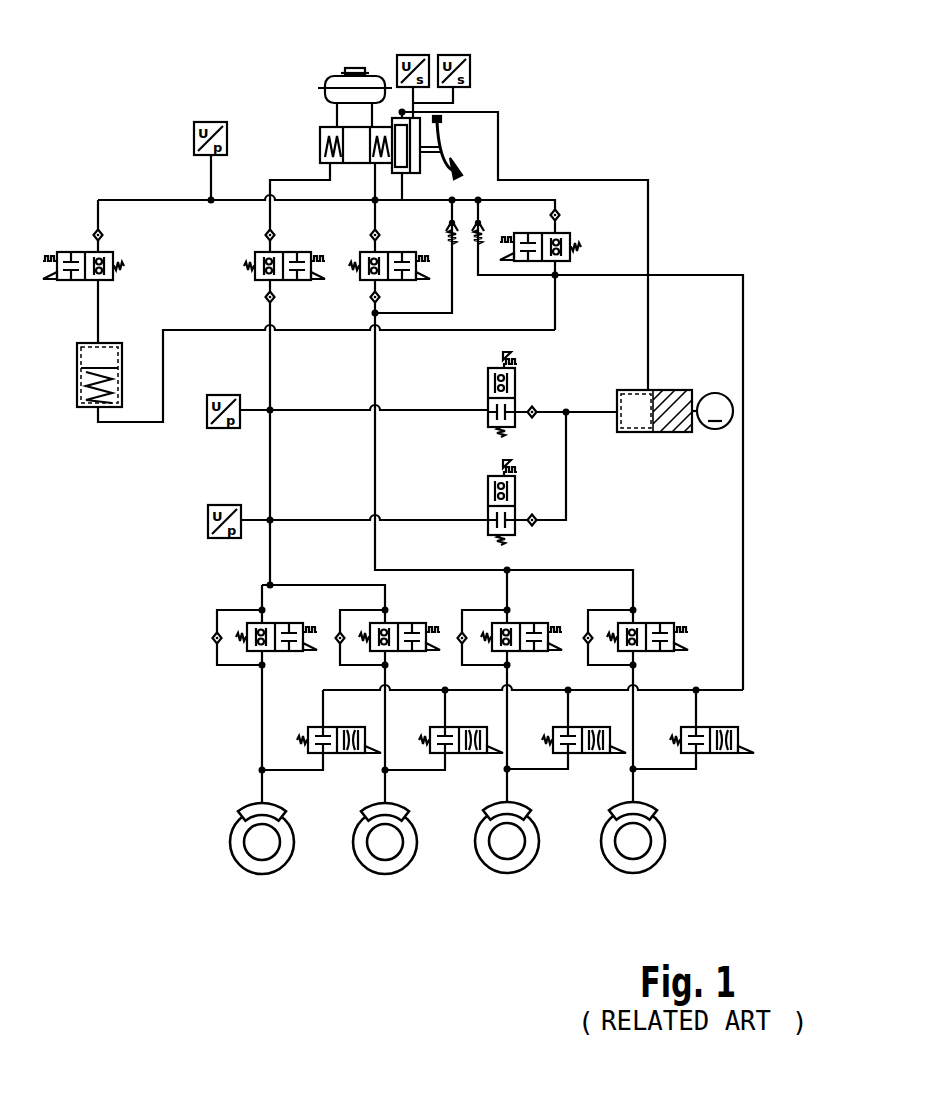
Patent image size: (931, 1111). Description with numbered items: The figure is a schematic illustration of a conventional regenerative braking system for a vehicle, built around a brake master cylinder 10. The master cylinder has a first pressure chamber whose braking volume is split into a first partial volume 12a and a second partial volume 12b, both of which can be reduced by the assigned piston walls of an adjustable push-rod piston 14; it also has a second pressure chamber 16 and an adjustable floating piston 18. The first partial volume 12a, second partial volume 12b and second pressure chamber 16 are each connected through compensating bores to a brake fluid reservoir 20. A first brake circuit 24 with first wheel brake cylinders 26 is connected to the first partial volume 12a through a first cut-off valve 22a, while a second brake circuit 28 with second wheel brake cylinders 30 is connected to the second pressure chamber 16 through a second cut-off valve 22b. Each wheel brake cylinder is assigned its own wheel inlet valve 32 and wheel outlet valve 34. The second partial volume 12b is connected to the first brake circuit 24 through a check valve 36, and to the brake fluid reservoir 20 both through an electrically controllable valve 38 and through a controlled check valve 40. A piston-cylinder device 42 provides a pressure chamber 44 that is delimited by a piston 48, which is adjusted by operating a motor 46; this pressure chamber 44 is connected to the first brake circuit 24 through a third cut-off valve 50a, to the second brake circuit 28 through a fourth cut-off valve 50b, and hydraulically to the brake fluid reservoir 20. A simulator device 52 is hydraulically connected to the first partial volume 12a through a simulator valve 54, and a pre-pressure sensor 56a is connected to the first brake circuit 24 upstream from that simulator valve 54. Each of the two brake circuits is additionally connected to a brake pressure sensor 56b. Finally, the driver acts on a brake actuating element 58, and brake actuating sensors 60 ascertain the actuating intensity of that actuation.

The brake master cylinder 10 is at (296, 142).
The first partial volume 12a is at (362, 141).
The second partial volume 12b is at (393, 117).
The push-rod piston 14 is at (443, 151).
The second pressure chamber 16 is at (320, 150).
The floating piston 18 is at (357, 158).
The brake fluid reservoir 20 is at (338, 76).
The first cut-off valve 22a is at (396, 252).
The second cut-off valve 22b is at (291, 252).
The first brake circuit 24 is at (372, 538).
The first wheel brake cylinders 26 is at (507, 874).
The second brake circuit 28 is at (277, 567).
The second wheel brake cylinders 30 is at (262, 875).
The wheel inlet valve 32 is at (291, 652).
The wheel outlet valve 34 is at (345, 755).
The check valve 36 is at (457, 232).
The electrically controllable valve 38 is at (572, 243).
The controlled check valve 40 is at (483, 234).
The piston-cylinder device 42 is at (673, 432).
The pressure chamber 44 is at (636, 390).
The motor 46 is at (712, 443).
The piston 48 is at (672, 390).
The third cut-off valve 50a is at (488, 386).
The fourth cut-off valve 50b is at (488, 496).
The simulator device 52 is at (77, 358).
The simulator valve 54 is at (75, 250).
The pre-pressure sensor 56a is at (194, 137).
The brake pressure sensor 56b is at (218, 395).
The brake actuating element 58 is at (448, 122).
The brake actuating sensors 60 is at (450, 55).